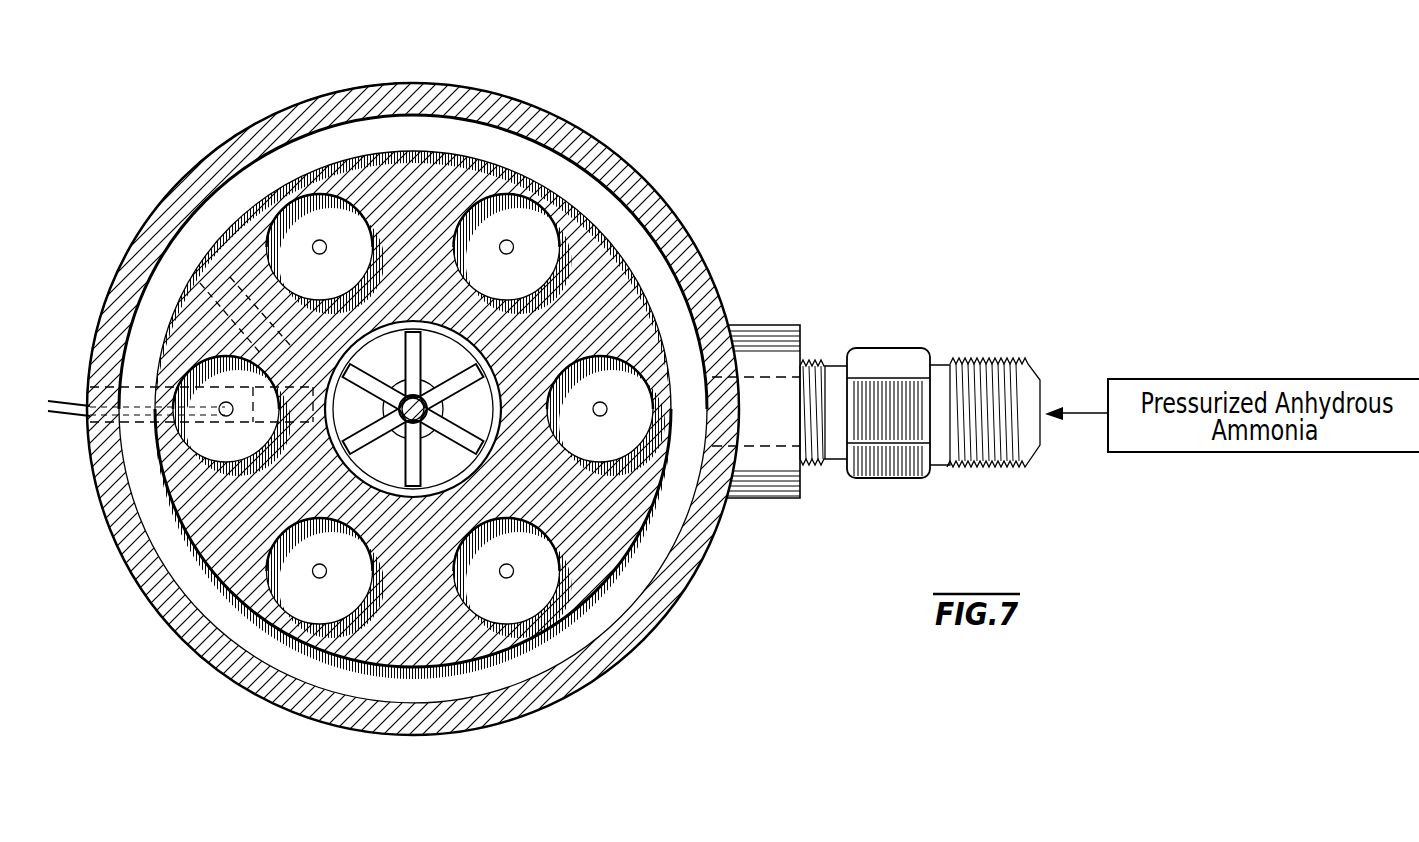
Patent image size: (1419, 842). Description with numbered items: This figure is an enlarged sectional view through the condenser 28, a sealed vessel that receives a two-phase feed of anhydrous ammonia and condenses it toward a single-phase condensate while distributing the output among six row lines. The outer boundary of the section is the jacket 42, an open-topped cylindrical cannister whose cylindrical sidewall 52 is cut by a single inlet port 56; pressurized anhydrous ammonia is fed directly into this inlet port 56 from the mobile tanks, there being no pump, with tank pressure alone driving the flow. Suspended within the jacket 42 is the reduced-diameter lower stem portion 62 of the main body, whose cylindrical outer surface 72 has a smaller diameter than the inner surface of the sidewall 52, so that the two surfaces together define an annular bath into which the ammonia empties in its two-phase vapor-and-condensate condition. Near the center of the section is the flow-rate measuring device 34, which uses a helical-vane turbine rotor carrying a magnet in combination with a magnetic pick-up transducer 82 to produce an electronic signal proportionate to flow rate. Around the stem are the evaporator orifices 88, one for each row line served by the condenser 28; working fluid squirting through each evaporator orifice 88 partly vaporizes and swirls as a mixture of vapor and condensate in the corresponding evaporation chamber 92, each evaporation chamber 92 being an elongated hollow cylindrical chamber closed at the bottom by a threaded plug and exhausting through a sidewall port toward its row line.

The condenser 28 is at (653, 117).
The flow-rate measuring device 34 is at (207, 253).
The jacket 42 is at (690, 230).
The cylindrical sidewall 52 is at (603, 356).
The inlet port 56 is at (908, 358).
The lower stem portion 62 is at (432, 322).
The cylindrical outer surface 72 is at (413, 409).
The magnetic pick-up transducer 82 is at (190, 272).
The evaporator orifice 88 is at (313, 246).
The evaporation chamber 92 is at (372, 252).